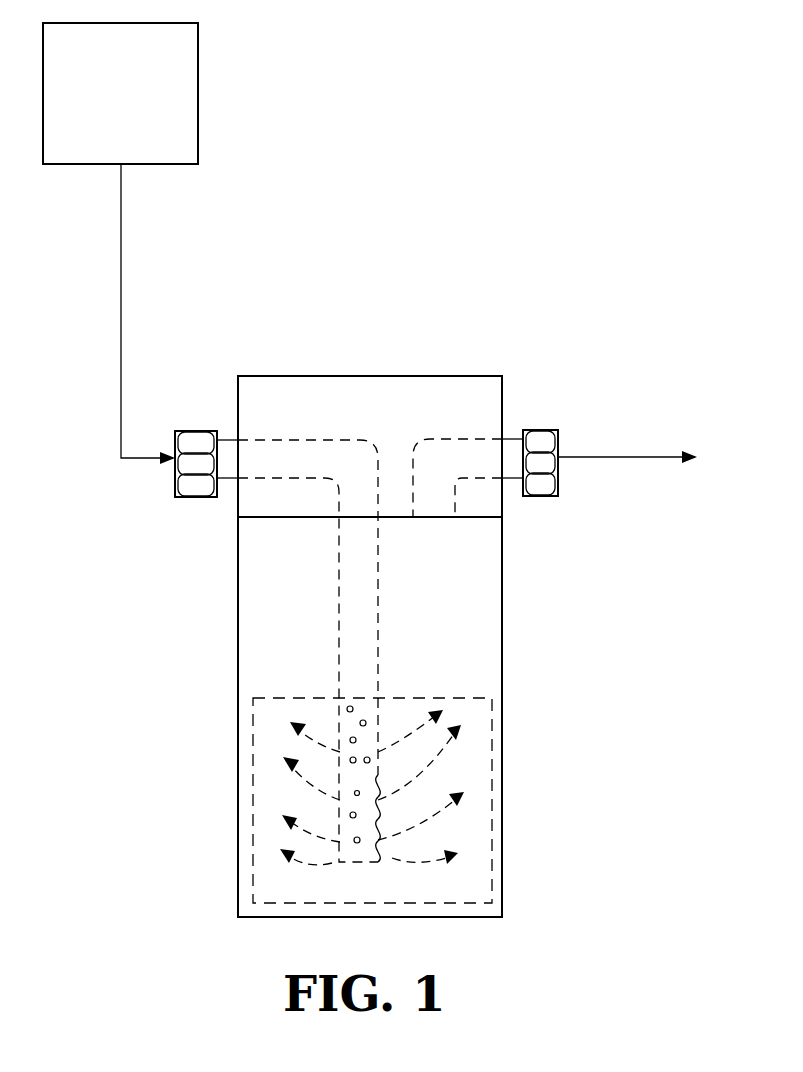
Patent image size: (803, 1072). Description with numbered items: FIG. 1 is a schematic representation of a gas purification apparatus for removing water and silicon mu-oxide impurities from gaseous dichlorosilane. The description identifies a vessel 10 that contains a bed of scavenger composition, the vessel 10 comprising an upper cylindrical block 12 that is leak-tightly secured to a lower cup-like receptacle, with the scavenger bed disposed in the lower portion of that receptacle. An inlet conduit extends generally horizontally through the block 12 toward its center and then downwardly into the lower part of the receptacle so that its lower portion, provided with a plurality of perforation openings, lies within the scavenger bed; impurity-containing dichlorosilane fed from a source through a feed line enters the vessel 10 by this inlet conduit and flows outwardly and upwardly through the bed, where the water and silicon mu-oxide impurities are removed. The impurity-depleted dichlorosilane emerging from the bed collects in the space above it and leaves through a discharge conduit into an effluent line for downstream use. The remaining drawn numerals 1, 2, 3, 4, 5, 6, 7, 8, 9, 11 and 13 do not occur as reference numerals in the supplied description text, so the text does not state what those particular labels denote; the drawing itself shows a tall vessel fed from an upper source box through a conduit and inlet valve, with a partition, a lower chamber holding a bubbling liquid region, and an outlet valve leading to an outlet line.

The apparatus 1 is at (210, 850).
The vessel 2 is at (373, 376).
The lower chamber 3 is at (260, 634).
The partition 4 is at (237, 518).
The liquid region 5 is at (460, 813).
The inlet valve 6 is at (228, 438).
The inlet valve body 7 is at (195, 499).
The conduit 8 is at (121, 270).
The gas source 9 is at (199, 65).
The vessel 10 is at (338, 805).
The outlet valve 11 is at (510, 437).
The upper cylindrical block 12 is at (547, 497).
The outlet line 13 is at (633, 455).